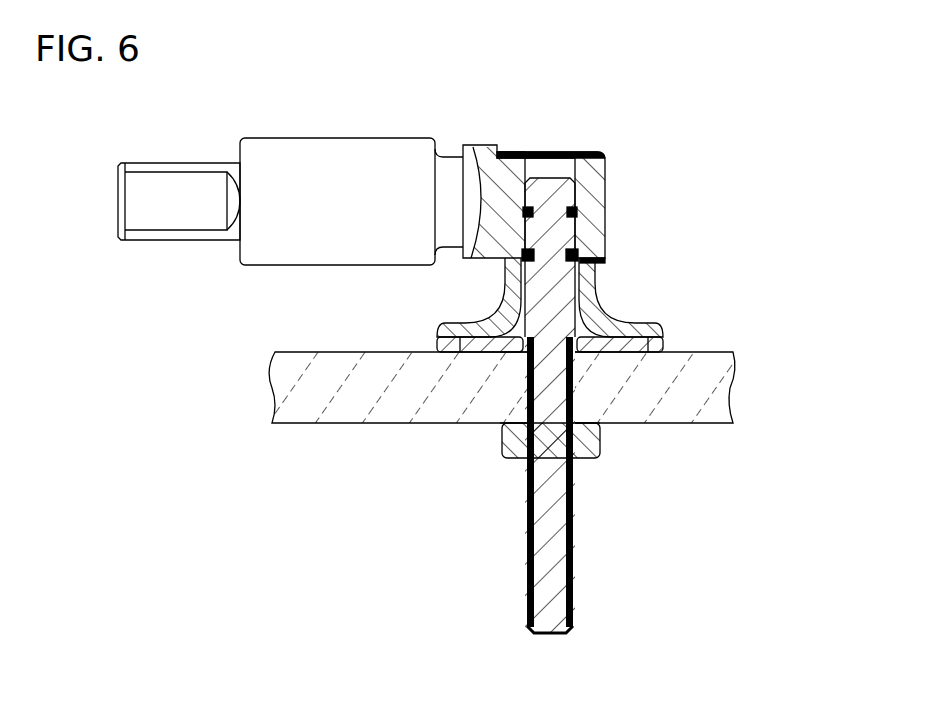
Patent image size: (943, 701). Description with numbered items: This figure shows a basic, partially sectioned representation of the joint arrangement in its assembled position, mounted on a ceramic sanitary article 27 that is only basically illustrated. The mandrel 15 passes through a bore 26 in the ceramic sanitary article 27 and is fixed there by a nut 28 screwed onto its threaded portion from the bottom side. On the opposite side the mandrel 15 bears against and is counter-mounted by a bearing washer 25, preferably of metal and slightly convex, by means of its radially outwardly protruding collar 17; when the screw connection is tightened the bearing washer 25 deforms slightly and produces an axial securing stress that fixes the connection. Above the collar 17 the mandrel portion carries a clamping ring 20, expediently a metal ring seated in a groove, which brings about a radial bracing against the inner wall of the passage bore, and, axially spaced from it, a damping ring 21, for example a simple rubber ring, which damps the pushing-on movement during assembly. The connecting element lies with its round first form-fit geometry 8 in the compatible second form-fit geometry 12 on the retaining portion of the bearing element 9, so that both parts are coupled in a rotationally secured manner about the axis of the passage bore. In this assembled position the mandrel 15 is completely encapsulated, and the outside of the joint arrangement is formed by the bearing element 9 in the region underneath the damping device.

The first form-fit geometry 8 is at (596, 249).
The bearing element 9 is at (502, 315).
The second form-fit geometry 12 is at (605, 262).
The mandrel 15 is at (553, 190).
The collar 17 is at (603, 320).
The clamping ring 20 is at (578, 212).
The damping ring 21 is at (578, 252).
The bearing washer 25 is at (447, 325).
The bore 26 is at (577, 385).
The ceramic sanitary article 27 is at (710, 392).
The nut 28 is at (600, 441).